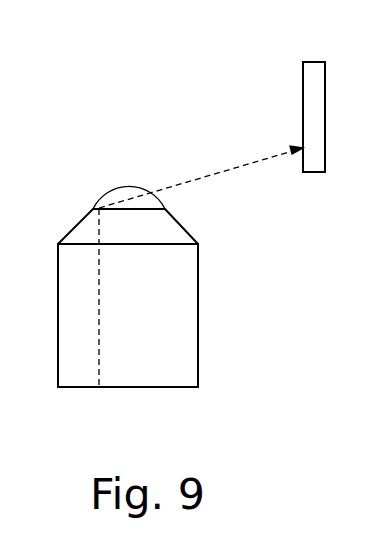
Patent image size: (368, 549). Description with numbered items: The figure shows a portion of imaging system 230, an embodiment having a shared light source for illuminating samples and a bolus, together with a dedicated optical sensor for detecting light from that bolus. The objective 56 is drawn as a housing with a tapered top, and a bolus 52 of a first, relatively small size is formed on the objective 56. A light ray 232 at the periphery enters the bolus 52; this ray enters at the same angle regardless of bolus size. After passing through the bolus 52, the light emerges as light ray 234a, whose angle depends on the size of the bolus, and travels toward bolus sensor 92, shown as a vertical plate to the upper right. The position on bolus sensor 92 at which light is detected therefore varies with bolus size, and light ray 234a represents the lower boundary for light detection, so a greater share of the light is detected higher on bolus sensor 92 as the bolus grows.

The imaging system 230 is at (163, 54).
The objective 56 is at (198, 313).
The bolus 52 is at (108, 190).
The light ray 232 is at (95, 312).
The light ray 234a is at (212, 170).
The bolus sensor 92 is at (325, 117).